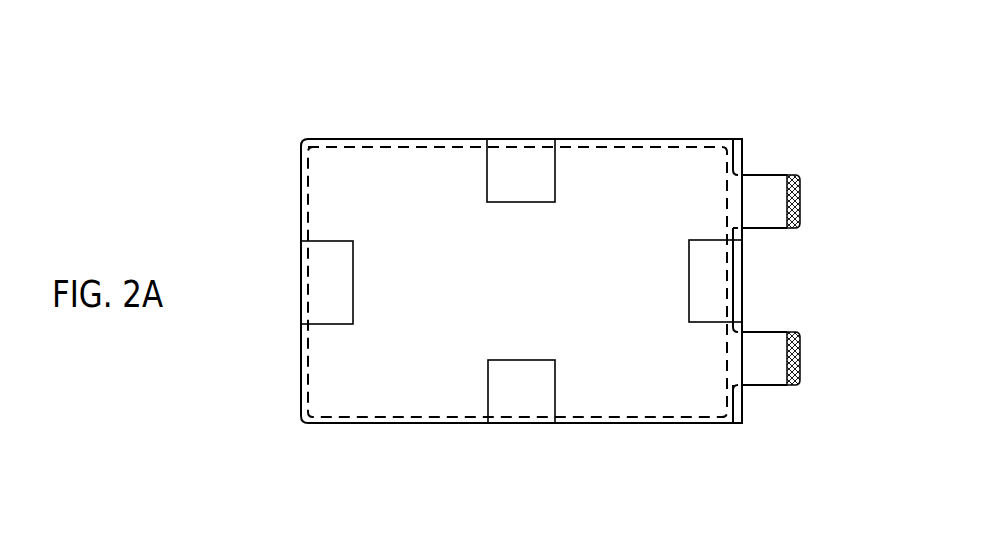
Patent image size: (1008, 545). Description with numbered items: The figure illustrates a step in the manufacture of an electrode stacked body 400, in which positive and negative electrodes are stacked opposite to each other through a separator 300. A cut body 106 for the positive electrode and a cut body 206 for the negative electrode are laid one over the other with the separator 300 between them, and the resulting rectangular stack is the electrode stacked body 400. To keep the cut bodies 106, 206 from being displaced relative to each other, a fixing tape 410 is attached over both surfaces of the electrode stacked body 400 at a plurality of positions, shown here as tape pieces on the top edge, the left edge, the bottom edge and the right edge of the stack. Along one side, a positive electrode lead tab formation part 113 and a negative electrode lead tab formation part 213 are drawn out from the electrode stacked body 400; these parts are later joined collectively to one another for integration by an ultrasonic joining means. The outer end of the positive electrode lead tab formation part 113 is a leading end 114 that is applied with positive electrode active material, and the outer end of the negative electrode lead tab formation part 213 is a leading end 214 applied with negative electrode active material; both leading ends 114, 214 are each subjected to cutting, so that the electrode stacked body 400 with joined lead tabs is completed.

The electrode stacked body 400 is at (305, 115).
The fixing tape 410 is at (518, 158).
The cut body for positive electrode 106 is at (617, 147).
The cut body for negative electrode 206 is at (742, 139).
The separator 300 is at (742, 157).
The positive electrode lead tab formation part 113 is at (798, 160).
The leading end of positive electrode lead tab formation part 114 is at (800, 188).
The negative electrode lead tab formation part 213 is at (786, 312).
The leading end of negative electrode lead tab formation part 214 is at (800, 353).